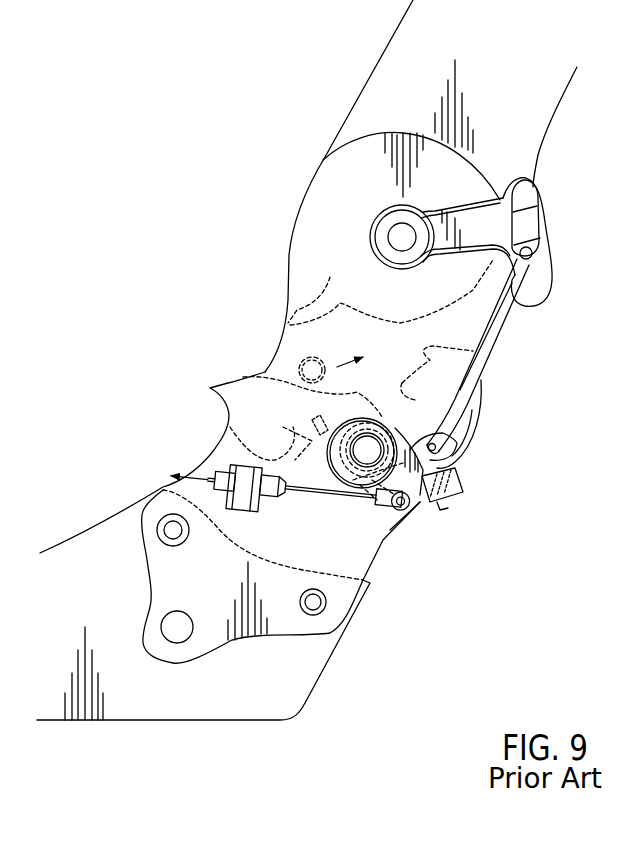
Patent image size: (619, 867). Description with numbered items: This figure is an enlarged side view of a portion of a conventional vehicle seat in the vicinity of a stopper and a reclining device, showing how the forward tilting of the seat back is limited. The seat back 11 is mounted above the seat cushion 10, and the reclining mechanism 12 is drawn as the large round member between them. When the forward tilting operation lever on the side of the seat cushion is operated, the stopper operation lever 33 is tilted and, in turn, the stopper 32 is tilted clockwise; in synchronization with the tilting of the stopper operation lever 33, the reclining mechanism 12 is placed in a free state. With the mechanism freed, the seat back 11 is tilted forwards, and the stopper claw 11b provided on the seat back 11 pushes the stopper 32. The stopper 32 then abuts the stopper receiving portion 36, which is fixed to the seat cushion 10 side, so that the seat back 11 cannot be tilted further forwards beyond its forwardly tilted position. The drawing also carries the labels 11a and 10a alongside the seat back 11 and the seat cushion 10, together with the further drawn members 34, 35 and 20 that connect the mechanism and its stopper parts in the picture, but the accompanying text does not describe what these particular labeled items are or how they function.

The seat back frame 11a is at (383, 92).
The seat back 11 is at (421, 186).
The stopper claw 11b is at (266, 414).
The reclining mechanism 12 is at (473, 153).
The hook 35 is at (480, 200).
The lever 34 is at (485, 362).
The stopper receiving portion 36 is at (392, 438).
The stopper 32 is at (297, 367).
The stopper operation lever 33 is at (465, 488).
The cable adjuster 20 is at (308, 497).
The seat cushion frame 10a is at (308, 676).
The seat cushion 10 is at (243, 605).